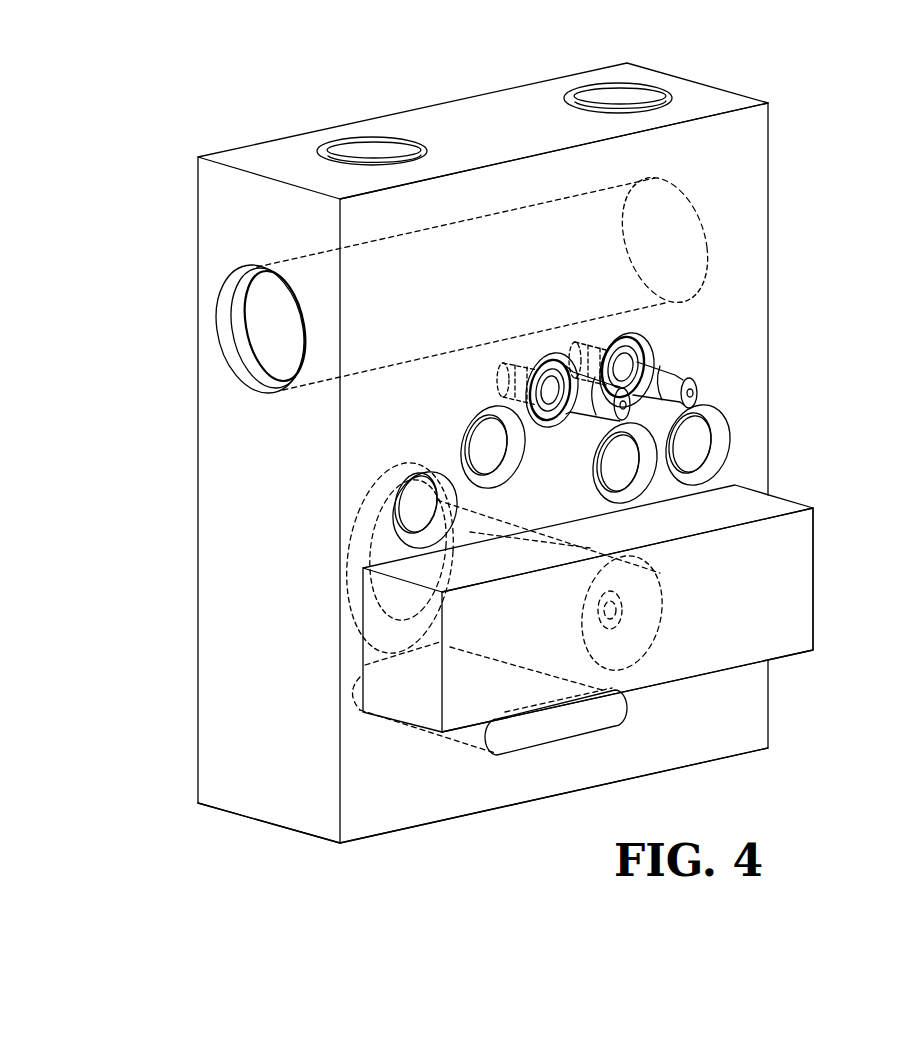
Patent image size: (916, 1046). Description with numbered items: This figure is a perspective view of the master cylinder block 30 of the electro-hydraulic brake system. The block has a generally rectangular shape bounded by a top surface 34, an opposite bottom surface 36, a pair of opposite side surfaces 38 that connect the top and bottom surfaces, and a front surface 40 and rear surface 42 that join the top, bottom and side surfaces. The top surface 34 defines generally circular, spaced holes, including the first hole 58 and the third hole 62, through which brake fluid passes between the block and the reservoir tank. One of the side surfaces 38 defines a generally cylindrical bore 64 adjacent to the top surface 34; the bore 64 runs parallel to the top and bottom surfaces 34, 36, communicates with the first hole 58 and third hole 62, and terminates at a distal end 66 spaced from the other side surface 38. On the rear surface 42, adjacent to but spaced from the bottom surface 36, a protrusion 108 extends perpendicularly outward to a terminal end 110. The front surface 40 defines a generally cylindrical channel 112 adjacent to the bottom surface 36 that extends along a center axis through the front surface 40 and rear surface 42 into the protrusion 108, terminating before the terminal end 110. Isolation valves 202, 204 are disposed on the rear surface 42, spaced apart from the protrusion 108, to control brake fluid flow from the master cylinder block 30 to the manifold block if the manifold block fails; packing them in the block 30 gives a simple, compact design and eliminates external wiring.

The master cylinder block 30 is at (486, 431).
The top surface 34 is at (519, 112).
The bottom surface 36 is at (562, 779).
The side surfaces 38 is at (228, 492).
The front surface 40 is at (206, 186).
The rear surface 42 is at (668, 145).
The first hole 58 is at (645, 90).
The third hole 62 is at (352, 140).
The bore 64 is at (246, 322).
The distal end 66 is at (690, 226).
The protrusion 108 is at (785, 508).
The terminal end 110 is at (802, 555).
The channel 112 is at (362, 550).
The isolation valve 202 is at (687, 374).
The isolation valve 204 is at (606, 414).